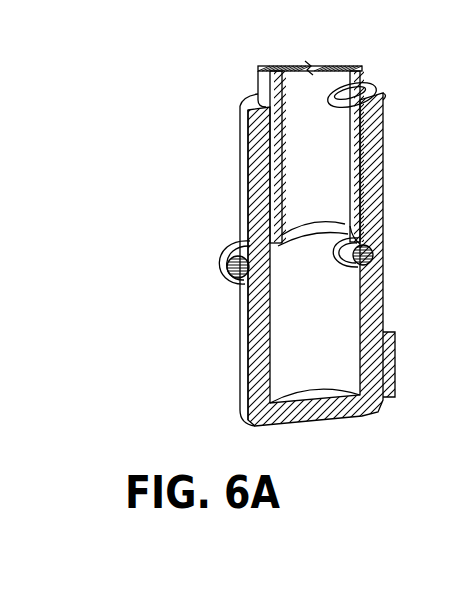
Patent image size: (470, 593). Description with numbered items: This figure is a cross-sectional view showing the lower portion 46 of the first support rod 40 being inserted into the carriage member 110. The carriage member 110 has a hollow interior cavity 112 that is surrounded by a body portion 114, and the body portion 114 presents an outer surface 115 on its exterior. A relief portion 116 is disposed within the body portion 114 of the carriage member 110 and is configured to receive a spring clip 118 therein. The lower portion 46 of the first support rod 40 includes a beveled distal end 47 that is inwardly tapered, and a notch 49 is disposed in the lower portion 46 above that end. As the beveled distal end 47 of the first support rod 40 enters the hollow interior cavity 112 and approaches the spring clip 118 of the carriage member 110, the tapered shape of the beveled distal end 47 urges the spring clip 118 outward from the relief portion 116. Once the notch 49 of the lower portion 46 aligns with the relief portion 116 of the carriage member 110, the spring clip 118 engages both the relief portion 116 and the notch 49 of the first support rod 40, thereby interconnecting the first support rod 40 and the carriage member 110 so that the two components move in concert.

The first support rod 40 is at (235, 235).
The notch 49 is at (340, 84).
The carriage member 110 is at (235, 245).
The body portion 114 is at (248, 163).
The lower portion 46 is at (272, 200).
The beveled distal end 47 is at (233, 250).
The relief portion 116 is at (390, 254).
The spring clip 118 is at (205, 271).
The outer surface 115 is at (386, 291).
The hollow interior cavity 112 is at (300, 366).